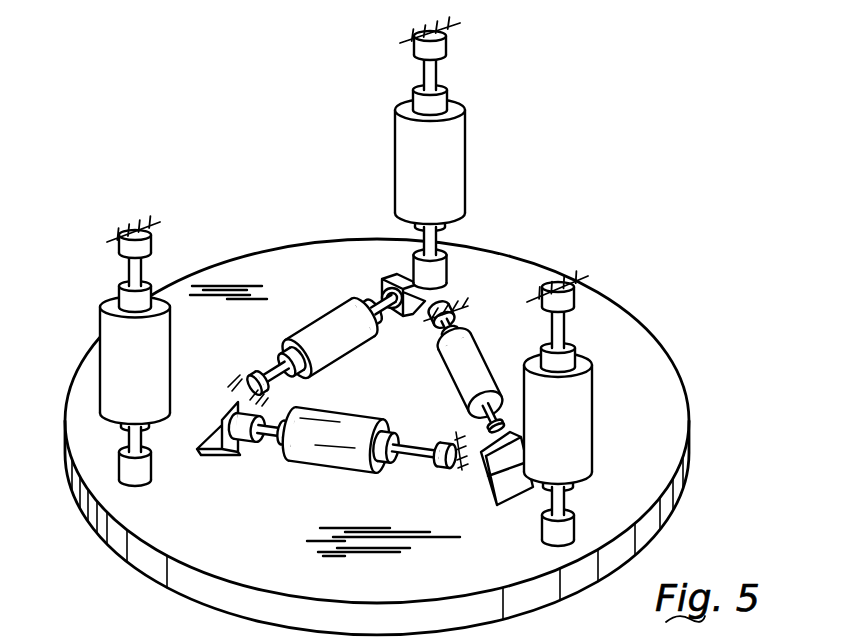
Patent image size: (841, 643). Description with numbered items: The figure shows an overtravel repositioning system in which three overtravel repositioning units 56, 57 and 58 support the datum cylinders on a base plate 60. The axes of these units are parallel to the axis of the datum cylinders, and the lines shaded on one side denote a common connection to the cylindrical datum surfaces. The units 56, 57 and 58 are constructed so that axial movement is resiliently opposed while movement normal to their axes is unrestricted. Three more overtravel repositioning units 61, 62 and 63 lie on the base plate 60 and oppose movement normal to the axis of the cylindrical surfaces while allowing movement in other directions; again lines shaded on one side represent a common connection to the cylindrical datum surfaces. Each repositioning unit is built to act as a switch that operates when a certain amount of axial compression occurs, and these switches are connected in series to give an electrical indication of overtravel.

The overtravel repositioning unit 56 is at (123, 362).
The overtravel repositioning unit 57 is at (460, 157).
The overtravel repositioning unit 58 is at (583, 413).
The base plate 60 is at (610, 327).
The overtravel repositioning unit 61 is at (353, 445).
The overtravel repositioning unit 62 is at (455, 362).
The overtravel repositioning unit 63 is at (323, 327).